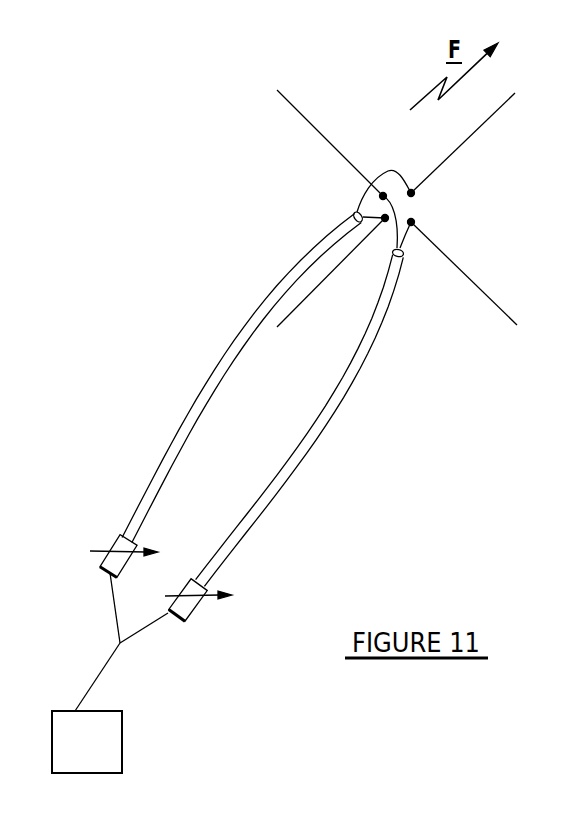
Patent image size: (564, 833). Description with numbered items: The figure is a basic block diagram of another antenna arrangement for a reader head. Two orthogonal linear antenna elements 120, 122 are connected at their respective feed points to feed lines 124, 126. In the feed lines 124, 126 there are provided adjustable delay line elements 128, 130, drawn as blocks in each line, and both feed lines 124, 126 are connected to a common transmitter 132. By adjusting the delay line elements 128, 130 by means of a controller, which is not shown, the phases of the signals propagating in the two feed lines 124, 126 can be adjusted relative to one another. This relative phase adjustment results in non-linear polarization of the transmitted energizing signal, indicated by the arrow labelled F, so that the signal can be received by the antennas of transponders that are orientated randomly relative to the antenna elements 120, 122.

The linear antenna element 120 is at (467, 167).
The linear antenna element 122 is at (366, 125).
The feed line 124 is at (202, 405).
The feed line 126 is at (323, 433).
The adjustable delay line element 128 is at (102, 565).
The adjustable delay line element 130 is at (193, 617).
The transmitter 132 is at (122, 722).